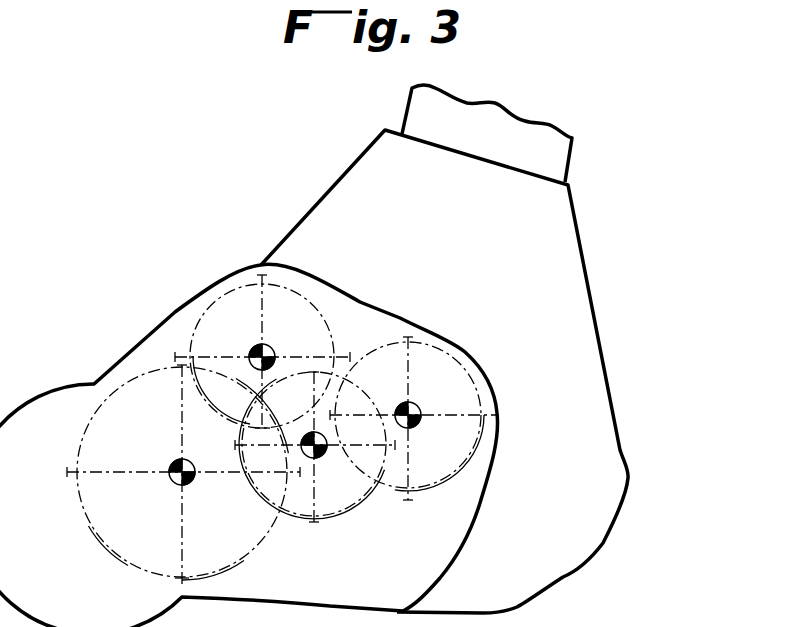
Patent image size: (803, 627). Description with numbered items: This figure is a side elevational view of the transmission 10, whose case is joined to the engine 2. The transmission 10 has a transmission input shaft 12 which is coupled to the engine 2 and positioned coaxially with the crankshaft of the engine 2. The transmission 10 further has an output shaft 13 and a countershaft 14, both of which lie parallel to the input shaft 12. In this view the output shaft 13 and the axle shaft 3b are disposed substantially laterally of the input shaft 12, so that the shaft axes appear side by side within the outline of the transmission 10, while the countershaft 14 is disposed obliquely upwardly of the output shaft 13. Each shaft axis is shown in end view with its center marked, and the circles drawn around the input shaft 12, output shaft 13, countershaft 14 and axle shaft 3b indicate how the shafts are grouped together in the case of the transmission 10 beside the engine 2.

The engine 2 is at (573, 319).
The transmission 10 is at (163, 327).
The axle shaft 3b is at (190, 485).
The transmission input shaft 12 is at (416, 427).
The output shaft 13 is at (322, 456).
The countershaft 14 is at (272, 347).